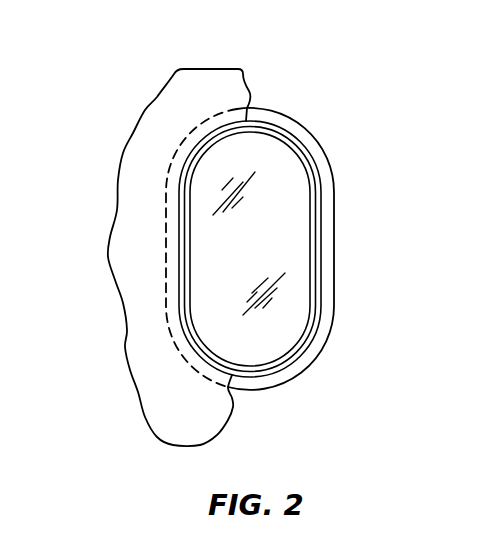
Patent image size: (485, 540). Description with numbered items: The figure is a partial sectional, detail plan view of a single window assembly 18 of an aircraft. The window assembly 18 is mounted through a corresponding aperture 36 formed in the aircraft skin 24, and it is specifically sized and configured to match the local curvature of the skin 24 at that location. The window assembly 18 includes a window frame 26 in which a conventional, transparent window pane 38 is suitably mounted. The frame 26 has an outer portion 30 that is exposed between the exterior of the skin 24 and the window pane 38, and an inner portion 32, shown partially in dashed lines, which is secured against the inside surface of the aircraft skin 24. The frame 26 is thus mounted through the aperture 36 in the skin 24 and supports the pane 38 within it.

The window assembly 18 is at (386, 119).
The aircraft skin 24 is at (170, 93).
The window frame 26 is at (346, 260).
The outer portion 30 is at (179, 231).
The inner portion 32 is at (328, 186).
The aperture 36 is at (283, 140).
The window pane 38 is at (256, 319).